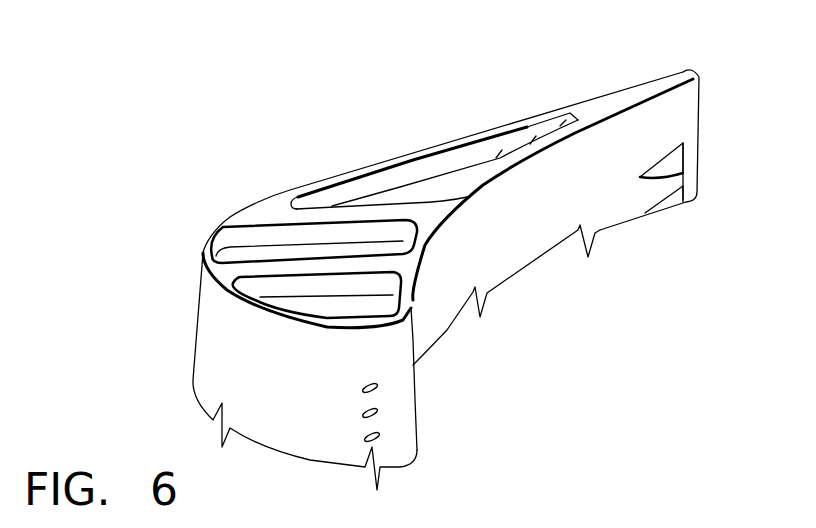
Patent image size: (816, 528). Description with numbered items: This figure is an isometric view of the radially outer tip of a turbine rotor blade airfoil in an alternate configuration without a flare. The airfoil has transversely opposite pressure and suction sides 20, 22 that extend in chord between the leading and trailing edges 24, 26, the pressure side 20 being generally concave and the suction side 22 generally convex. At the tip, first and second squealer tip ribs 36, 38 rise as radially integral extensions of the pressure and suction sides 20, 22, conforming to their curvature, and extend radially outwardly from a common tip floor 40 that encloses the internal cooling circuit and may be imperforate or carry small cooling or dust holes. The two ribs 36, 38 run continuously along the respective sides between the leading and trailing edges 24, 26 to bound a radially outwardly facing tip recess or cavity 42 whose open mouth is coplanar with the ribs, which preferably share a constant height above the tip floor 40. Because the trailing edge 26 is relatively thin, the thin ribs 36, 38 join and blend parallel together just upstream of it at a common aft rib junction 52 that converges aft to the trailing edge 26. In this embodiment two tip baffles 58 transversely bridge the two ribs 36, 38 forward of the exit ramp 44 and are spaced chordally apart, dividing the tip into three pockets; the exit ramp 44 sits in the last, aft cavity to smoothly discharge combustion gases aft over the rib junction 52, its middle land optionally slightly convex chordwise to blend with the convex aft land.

The pressure side 20 is at (502, 250).
The suction side 22 is at (278, 404).
The leading edge 24 is at (420, 412).
The trailing edge 26 is at (700, 118).
The first squealer tip rib 36 is at (510, 170).
The second squealer tip rib 38 is at (440, 144).
The tip floor 40 is at (412, 193).
The tip recess or cavity 42 is at (363, 190).
The exit ramp 44 is at (526, 116).
The aft rib junction 52 is at (598, 102).
The tip baffles 58 is at (320, 207).